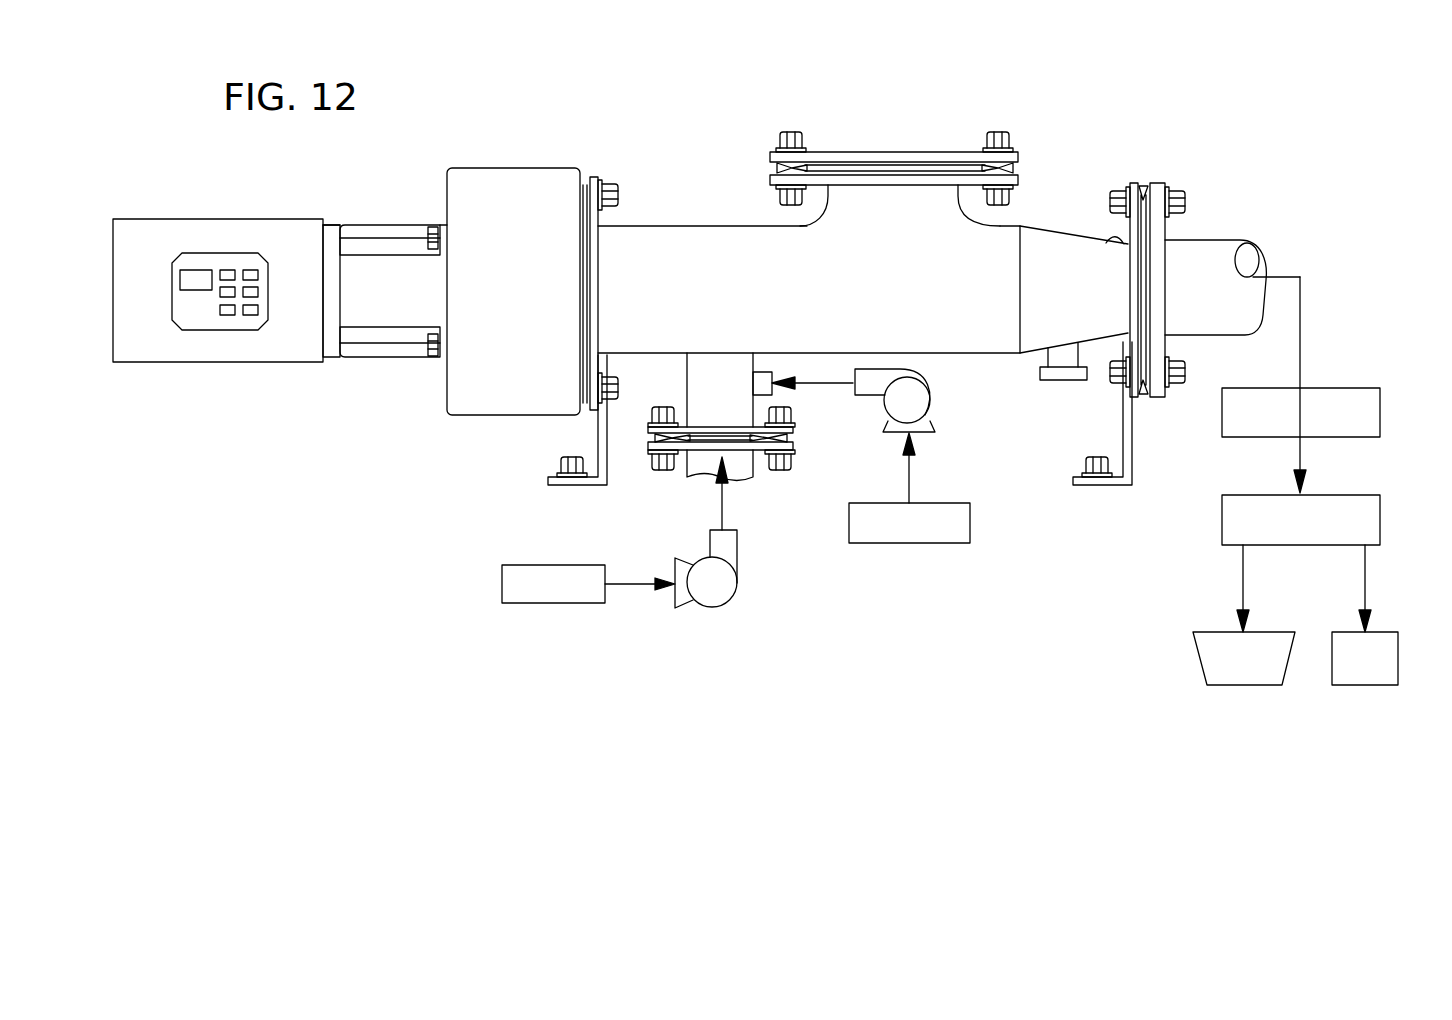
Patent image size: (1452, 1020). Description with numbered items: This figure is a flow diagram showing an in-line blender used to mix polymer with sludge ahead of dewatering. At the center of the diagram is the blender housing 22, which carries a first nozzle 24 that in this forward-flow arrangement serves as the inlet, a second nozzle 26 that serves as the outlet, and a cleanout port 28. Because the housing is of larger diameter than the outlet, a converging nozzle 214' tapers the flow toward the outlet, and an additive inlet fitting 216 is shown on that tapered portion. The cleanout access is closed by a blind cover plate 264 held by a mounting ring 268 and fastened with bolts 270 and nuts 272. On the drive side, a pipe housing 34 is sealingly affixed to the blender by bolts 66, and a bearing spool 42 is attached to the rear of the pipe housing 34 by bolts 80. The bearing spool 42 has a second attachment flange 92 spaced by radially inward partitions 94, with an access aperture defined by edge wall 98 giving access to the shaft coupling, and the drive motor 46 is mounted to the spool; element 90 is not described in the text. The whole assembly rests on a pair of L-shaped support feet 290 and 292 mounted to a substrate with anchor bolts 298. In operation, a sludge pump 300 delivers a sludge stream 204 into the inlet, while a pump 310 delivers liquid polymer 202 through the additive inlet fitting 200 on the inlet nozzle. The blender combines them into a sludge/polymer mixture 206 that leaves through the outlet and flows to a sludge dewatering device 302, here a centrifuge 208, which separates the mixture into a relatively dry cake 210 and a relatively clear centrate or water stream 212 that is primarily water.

The blender housing 22 is at (638, 226).
The first nozzle 24 is at (755, 402).
The second nozzle 26 is at (1128, 240).
The cleanout port 28 is at (960, 193).
The pipe housing 34 is at (478, 415).
The bearing spool 42 is at (333, 360).
The drive motor 46 is at (208, 363).
The bolt 66 is at (617, 193).
The bolts 80 is at (428, 228).
The housing flange 90 is at (440, 222).
The second attachment flange 92 is at (330, 227).
The radially inward partitions 94 is at (357, 230).
The edge wall 98 is at (383, 255).
The additive inlet fitting 200 is at (772, 353).
The polymer 202 is at (917, 543).
The sludge stream 204 is at (567, 603).
The sludge/polymer mixture 206 is at (1287, 273).
The centrifuge 208 is at (1357, 495).
The cake 210 is at (1265, 632).
The water stream 212 is at (1385, 632).
The converging nozzle 214' is at (1116, 271).
The additive inlet fitting 216 is at (1047, 358).
The blind cover plate 264 is at (970, 157).
The mounting ring 268 is at (770, 180).
The bolts 270 is at (790, 133).
The nuts 272 is at (775, 197).
The support foot 290 is at (607, 452).
The support foot 292 is at (1132, 436).
The anchor bolts 298 is at (558, 463).
The sludge pump 300 is at (737, 592).
The sludge dewatering device 302 is at (1322, 388).
The pump 310 is at (925, 395).